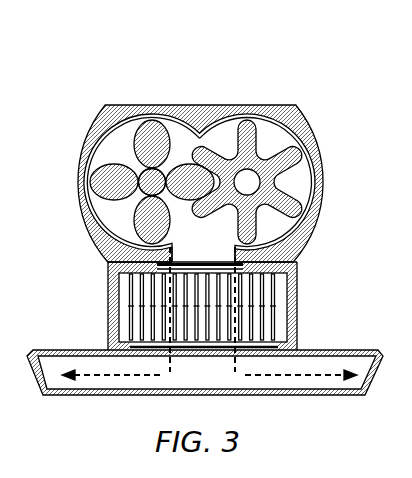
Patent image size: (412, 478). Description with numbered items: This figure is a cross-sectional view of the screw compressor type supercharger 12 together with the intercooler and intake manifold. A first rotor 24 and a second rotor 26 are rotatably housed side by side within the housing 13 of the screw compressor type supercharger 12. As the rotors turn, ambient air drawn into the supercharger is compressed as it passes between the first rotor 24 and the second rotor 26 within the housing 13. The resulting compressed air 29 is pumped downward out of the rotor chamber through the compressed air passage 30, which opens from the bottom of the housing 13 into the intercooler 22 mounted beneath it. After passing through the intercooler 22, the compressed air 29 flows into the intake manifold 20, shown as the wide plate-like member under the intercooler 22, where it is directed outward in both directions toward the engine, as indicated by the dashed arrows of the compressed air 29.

The screw compressor type supercharger 12 is at (72, 106).
The housing 13 is at (195, 110).
The intake manifold 20 is at (40, 372).
The intercooler 22 is at (292, 290).
The first rotor 24 is at (152, 127).
The second rotor 26 is at (249, 128).
The compressed air 29 is at (157, 373).
The compressed air passage 30 is at (214, 258).